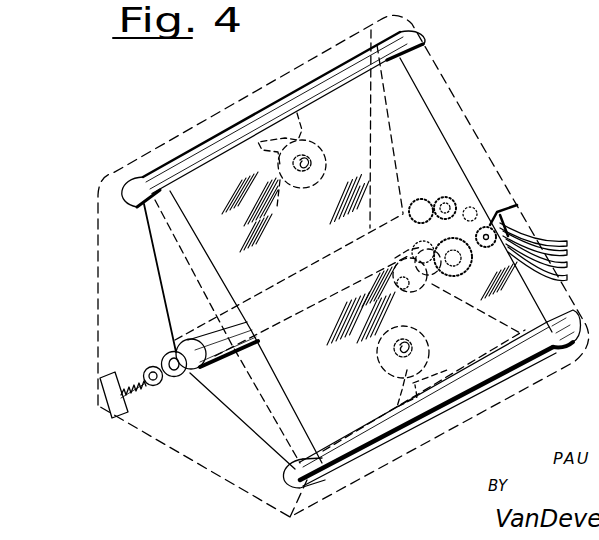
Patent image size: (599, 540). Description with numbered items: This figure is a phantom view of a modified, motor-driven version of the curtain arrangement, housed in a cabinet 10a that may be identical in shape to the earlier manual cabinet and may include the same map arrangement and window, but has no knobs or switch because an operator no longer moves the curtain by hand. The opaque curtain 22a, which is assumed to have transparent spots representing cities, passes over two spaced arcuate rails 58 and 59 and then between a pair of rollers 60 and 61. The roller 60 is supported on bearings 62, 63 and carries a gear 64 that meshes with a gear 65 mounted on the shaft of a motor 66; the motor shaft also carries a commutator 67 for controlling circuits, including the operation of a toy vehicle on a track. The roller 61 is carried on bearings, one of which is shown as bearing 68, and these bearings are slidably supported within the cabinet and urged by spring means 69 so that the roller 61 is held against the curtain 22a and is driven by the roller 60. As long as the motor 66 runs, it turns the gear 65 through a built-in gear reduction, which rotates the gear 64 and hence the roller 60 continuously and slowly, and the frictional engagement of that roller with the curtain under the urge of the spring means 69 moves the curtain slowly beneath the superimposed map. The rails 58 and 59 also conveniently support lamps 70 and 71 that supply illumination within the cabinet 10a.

The cabinet 10a is at (198, 457).
The curtain 22a is at (428, 131).
The arcuate rail 58 is at (135, 208).
The arcuate rail 59 is at (288, 476).
The roller 60 is at (203, 372).
The roller 61 is at (172, 344).
The bearing 62 is at (173, 388).
The bearing 63 is at (450, 216).
The gear 64 is at (500, 197).
The gear 65 is at (470, 265).
The motor 66 is at (437, 293).
The commutator 67 is at (517, 213).
The bearing 68 is at (151, 388).
The spring means 69 is at (131, 386).
The lamp 70 is at (387, 383).
The lamp 71 is at (292, 171).